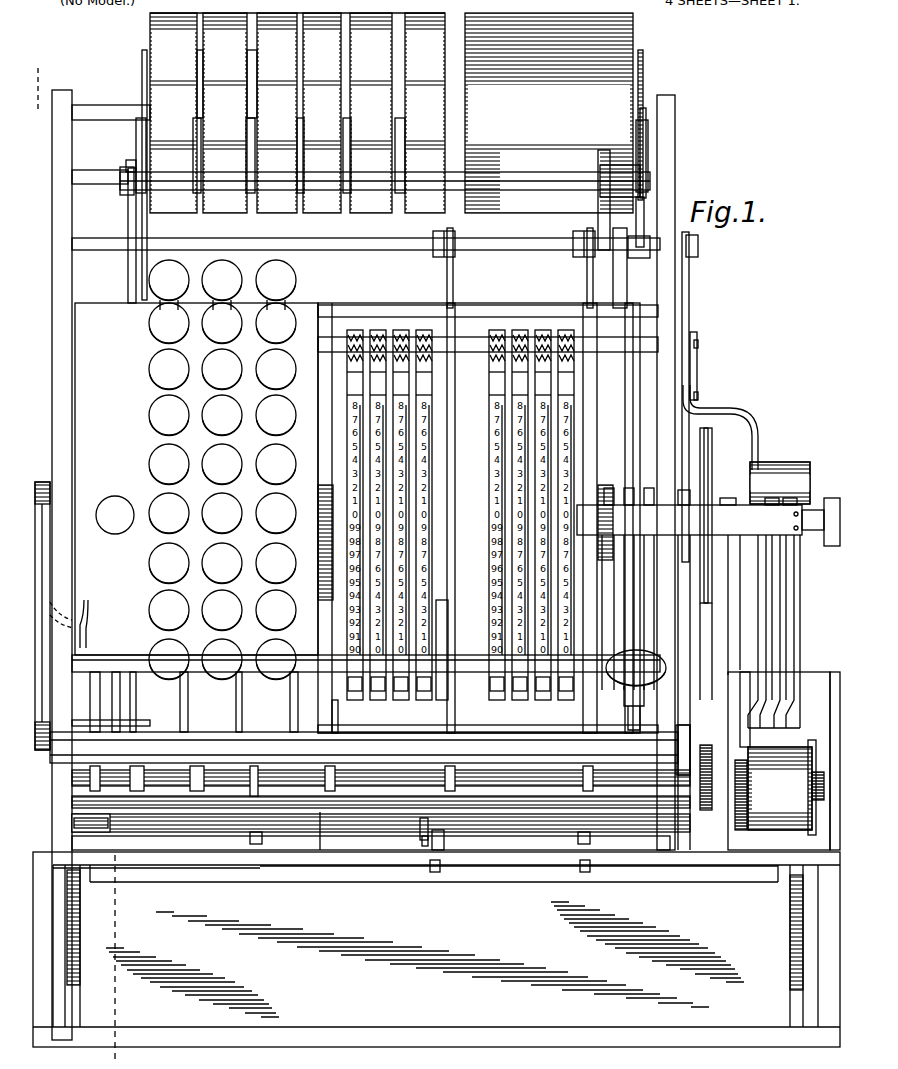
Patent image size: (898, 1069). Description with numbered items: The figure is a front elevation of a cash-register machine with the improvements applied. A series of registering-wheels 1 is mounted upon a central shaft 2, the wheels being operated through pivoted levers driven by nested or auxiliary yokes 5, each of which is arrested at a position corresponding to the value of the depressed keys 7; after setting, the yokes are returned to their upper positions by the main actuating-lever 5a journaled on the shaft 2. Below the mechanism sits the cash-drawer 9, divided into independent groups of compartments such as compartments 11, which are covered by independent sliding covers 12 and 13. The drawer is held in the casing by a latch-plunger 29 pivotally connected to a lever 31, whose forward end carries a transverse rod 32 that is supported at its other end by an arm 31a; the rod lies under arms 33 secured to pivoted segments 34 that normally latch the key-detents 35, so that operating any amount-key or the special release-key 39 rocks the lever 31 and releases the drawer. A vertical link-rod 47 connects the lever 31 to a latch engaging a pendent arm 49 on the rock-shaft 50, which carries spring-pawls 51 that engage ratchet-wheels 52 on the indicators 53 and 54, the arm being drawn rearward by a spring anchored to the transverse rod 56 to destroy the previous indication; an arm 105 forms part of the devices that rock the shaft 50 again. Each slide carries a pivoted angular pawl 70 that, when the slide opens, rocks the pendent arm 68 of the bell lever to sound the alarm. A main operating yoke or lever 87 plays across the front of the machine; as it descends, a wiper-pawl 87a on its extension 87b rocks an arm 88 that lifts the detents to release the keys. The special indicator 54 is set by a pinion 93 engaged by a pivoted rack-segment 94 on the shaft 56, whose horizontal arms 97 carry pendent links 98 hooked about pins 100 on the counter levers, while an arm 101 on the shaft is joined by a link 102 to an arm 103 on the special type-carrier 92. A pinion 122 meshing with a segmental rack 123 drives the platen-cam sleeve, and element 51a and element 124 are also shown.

The registering-wheels 1 is at (348, 432).
The central shaft 2 is at (256, 559).
The nested or auxiliary yokes 5 is at (482, 584).
The main actuating-lever 5a is at (336, 720).
The keys 7 is at (160, 405).
The cash-drawer 9 is at (436, 949).
The compartments 11 is at (432, 870).
The sliding cover 12 is at (272, 876).
The sliding cover 13 is at (670, 880).
The latch-plunger 29 is at (446, 842).
The lever 31 is at (422, 832).
The arm 31a is at (108, 834).
The transverse rod 32 is at (341, 832).
The arms 33 is at (347, 389).
The pivoted segments 34 is at (238, 712).
The key-detents 35 is at (138, 700).
The special release-key 39 is at (116, 497).
The vertical link-rod 47 is at (112, 662).
The pendent arm 49 is at (128, 262).
The rock-shaft 50 is at (378, 196).
The spring-pawls 51 is at (406, 114).
The no sale indicator drum 51a is at (636, 33).
The ratchet-wheels 52 is at (142, 62).
The indicator 53 is at (150, 22).
The special indicator 54 is at (142, 138).
The transverse rod 56 is at (352, 243).
The pendent arm 68 is at (245, 840).
The pivoted angular pawl 70 is at (262, 838).
The main operating yoke or lever 87 is at (458, 742).
The wiper-pawl 87a is at (95, 642).
The extension 87b is at (80, 609).
The arm 88 is at (90, 718).
The special type-carrier 92 is at (765, 572).
The pinion 93 is at (642, 108).
The pivoted rack-segment 94 is at (642, 208).
The horizontal arms 97 is at (446, 256).
The pendent link 98 is at (456, 278).
The pins 100 is at (628, 296).
The arm 101 is at (690, 292).
The link 102 is at (694, 372).
The arm 103 is at (722, 414).
The arm 105 is at (620, 222).
The pinion 122 is at (706, 802).
The segmental rack 123 is at (706, 673).
The drum 124 is at (712, 820).